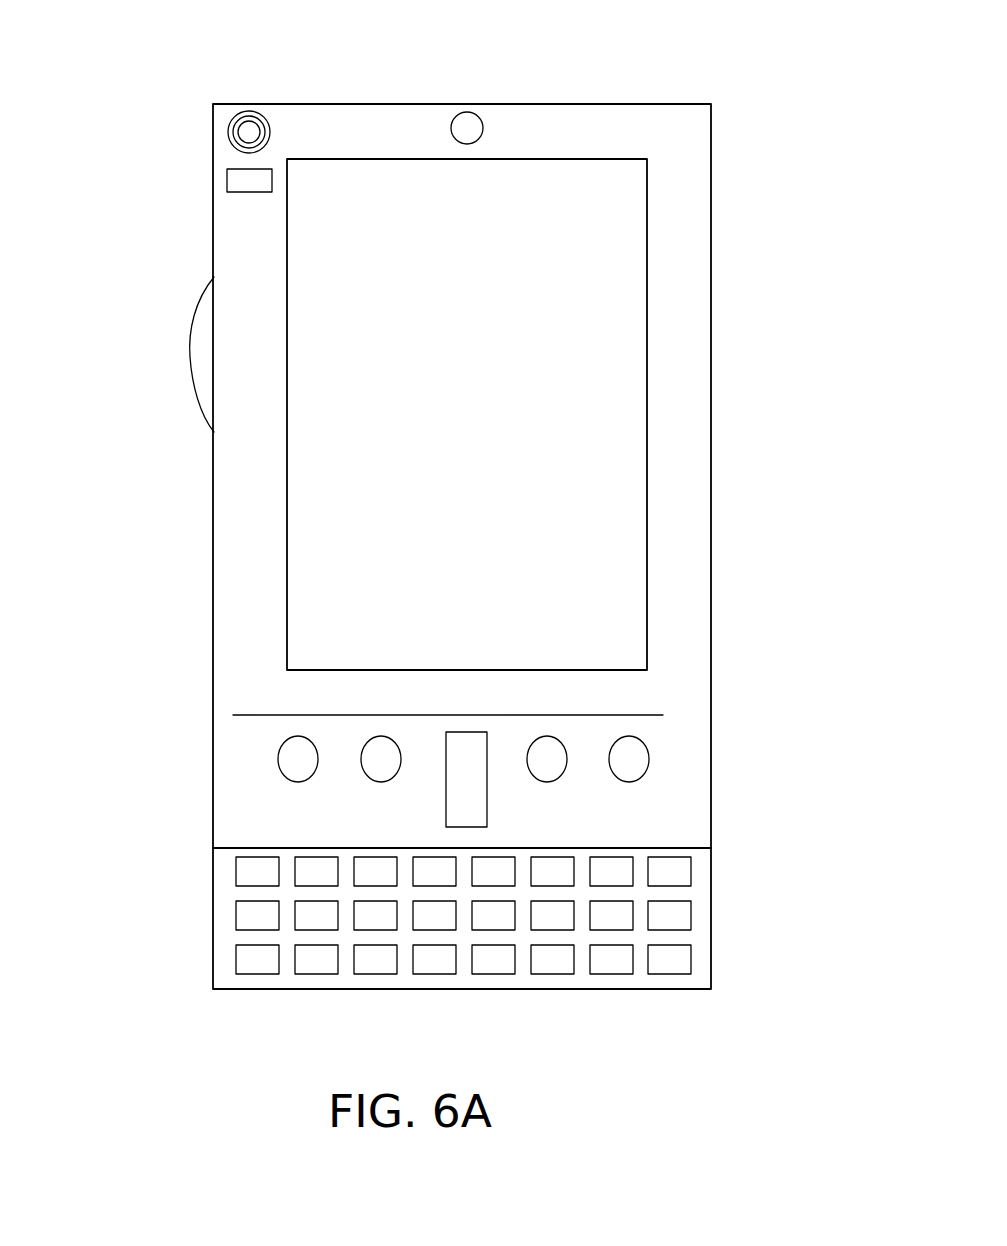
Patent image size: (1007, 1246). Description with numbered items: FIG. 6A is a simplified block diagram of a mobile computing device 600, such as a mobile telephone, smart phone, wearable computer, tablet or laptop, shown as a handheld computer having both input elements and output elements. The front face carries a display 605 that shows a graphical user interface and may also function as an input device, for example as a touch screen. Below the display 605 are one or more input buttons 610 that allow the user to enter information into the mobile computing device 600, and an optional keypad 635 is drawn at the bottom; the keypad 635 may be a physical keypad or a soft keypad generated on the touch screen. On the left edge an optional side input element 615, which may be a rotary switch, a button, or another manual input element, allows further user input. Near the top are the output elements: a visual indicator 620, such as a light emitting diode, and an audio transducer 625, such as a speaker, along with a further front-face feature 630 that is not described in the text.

The mobile computing device 600 is at (700, 120).
The display 605 is at (398, 583).
The input buttons 610 is at (465, 785).
The side input element 615 is at (205, 355).
The visual indicator 620 is at (229, 186).
The audio transducer 625 is at (230, 133).
The speaker 630 is at (478, 127).
The keypad 635 is at (222, 965).